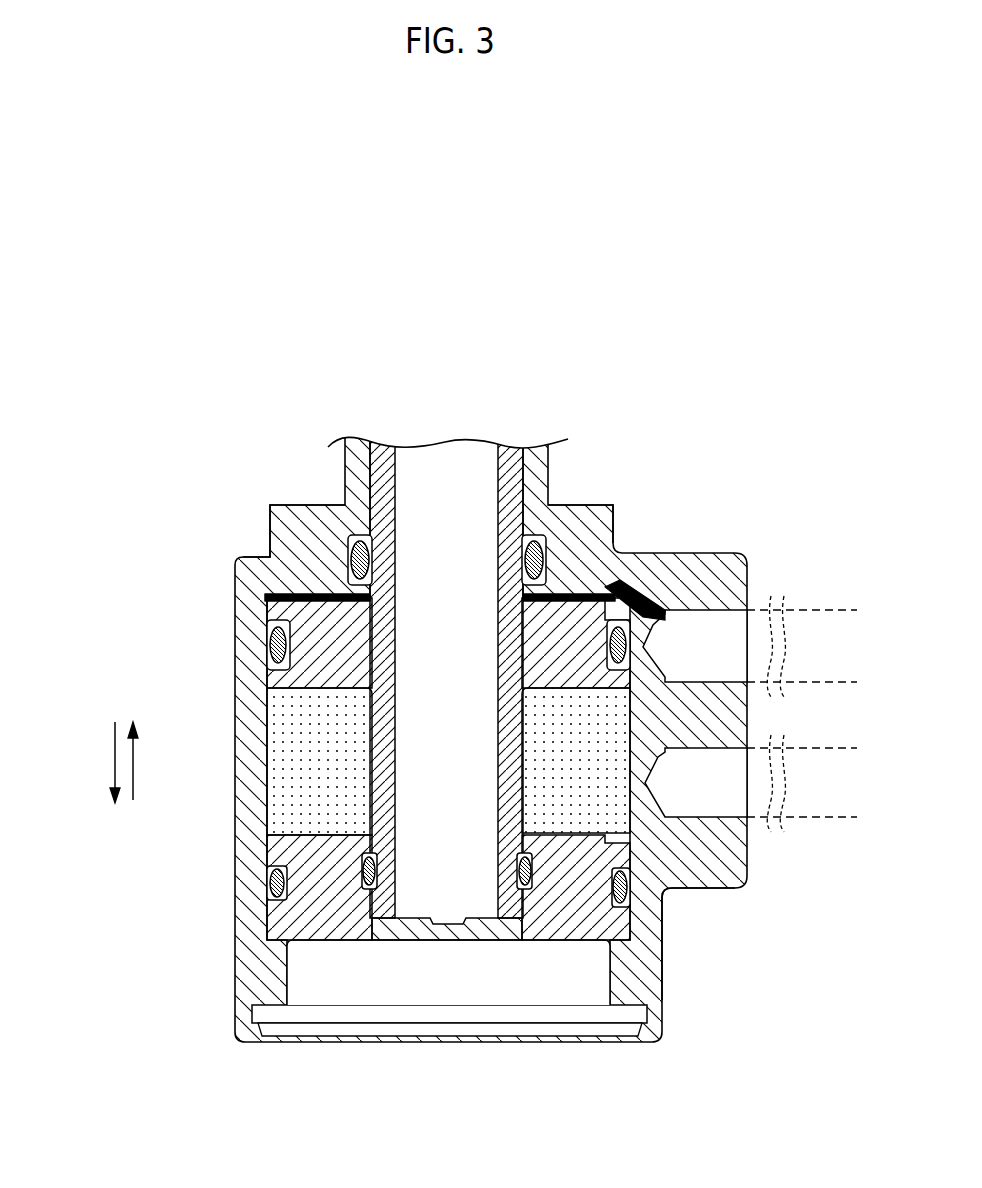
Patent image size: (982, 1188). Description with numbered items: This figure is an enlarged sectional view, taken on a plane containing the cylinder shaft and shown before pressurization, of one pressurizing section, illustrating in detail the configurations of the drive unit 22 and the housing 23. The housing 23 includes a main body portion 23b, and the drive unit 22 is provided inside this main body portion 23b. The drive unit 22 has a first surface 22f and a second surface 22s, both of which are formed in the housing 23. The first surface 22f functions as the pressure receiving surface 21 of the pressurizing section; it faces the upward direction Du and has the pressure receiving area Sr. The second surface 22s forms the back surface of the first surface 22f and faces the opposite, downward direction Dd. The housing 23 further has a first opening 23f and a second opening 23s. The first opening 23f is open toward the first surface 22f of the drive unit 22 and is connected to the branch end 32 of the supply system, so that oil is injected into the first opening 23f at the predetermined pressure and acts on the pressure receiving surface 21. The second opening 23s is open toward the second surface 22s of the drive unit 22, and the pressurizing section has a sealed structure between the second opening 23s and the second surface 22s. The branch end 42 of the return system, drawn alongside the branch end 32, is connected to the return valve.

The pressure receiving surface 21 is at (292, 593).
The first surface 22f is at (440, 597).
The drive unit 22 is at (523, 470).
The second surface 22s is at (293, 690).
The housing 23 is at (235, 873).
The main body portion 23b is at (235, 600).
The first opening 23f is at (620, 590).
The second opening 23s is at (683, 890).
The branch end 32 is at (815, 607).
The branch end 42 is at (808, 818).
The downward direction Dd is at (112, 763).
The upward direction Du is at (140, 763).